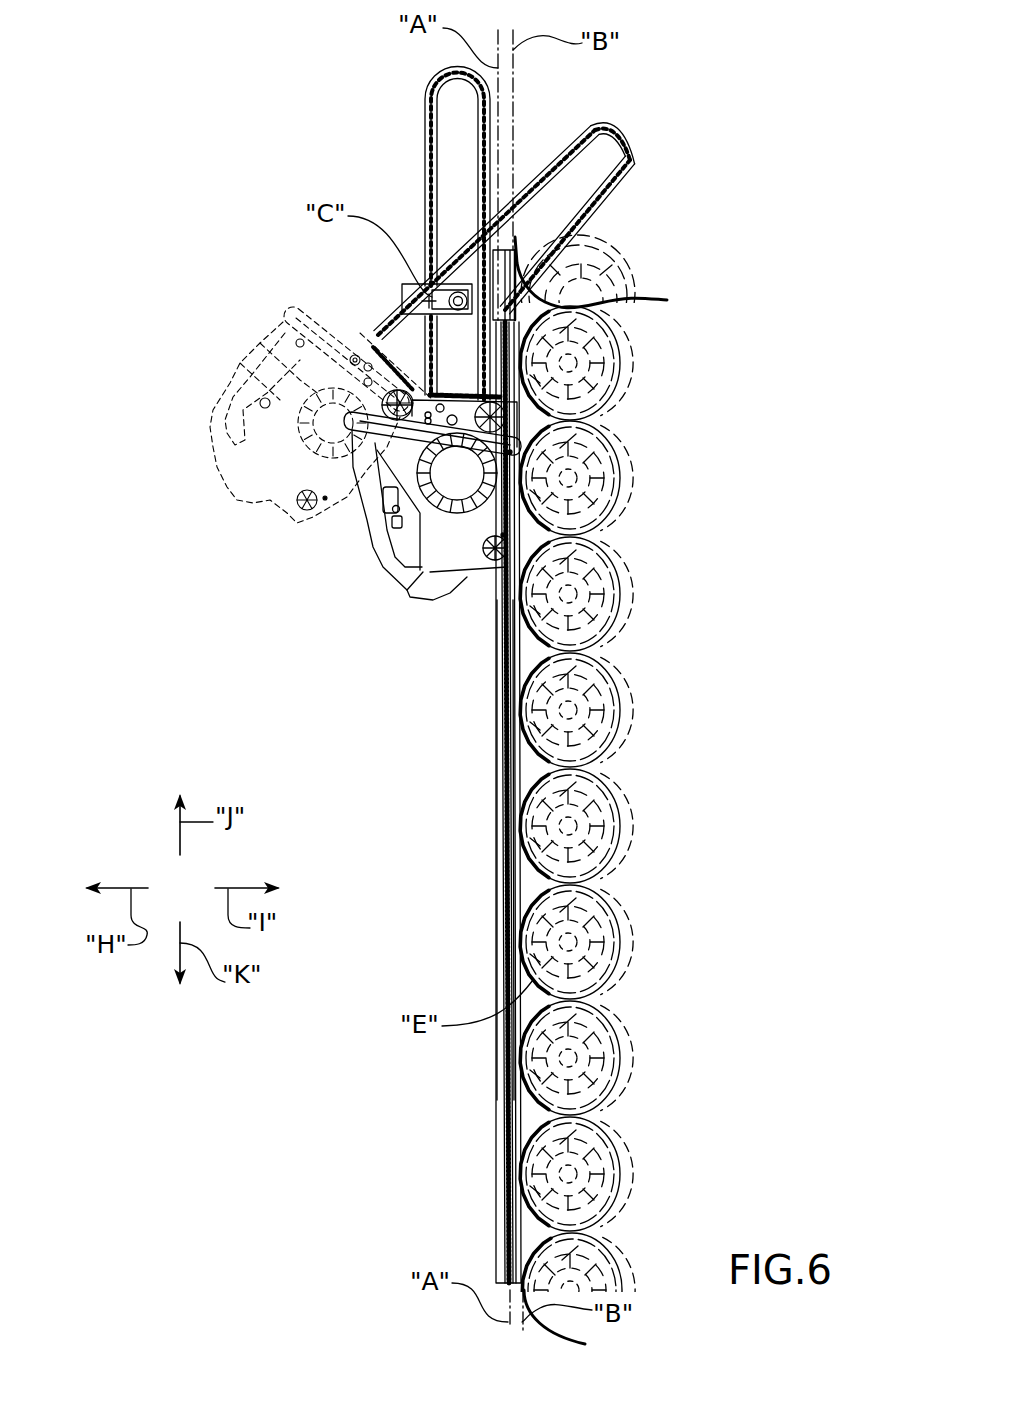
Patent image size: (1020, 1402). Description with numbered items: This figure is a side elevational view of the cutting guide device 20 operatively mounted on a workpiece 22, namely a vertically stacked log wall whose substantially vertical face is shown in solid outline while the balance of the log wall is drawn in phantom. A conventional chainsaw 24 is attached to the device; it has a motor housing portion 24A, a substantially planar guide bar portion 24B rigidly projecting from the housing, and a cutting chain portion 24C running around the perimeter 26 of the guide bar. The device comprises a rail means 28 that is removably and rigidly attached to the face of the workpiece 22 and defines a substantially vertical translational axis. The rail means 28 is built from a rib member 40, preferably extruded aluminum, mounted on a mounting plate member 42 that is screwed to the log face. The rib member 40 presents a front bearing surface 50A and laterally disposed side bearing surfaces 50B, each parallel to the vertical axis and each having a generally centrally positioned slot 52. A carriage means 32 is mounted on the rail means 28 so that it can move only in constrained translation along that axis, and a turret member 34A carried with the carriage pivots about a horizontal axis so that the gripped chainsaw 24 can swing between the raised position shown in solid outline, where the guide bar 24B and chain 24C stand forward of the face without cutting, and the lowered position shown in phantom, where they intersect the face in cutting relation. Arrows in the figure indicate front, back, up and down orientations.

The cutting guide device 20 is at (372, 268).
The workpiece 22 is at (672, 588).
The chainsaw 24 is at (332, 565).
The motor housing portion 24A is at (433, 585).
The guide bar portion 24B is at (457, 160).
The cutting chain portion 24C is at (425, 97).
The perimeter 26 is at (475, 197).
The rail means 28 is at (455, 781).
The carriage means 32 is at (522, 320).
The mounting bracket 34A is at (425, 292).
The rib member 40 is at (496, 1078).
The mounting plate member 42 is at (520, 1130).
The front bearing surface 50A is at (486, 952).
The side bearing surfaces 50B is at (504, 868).
The slot 52 is at (494, 815).